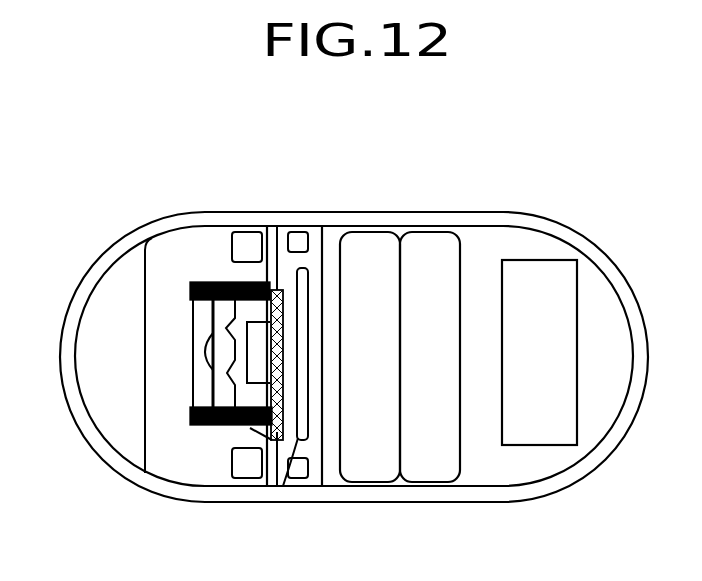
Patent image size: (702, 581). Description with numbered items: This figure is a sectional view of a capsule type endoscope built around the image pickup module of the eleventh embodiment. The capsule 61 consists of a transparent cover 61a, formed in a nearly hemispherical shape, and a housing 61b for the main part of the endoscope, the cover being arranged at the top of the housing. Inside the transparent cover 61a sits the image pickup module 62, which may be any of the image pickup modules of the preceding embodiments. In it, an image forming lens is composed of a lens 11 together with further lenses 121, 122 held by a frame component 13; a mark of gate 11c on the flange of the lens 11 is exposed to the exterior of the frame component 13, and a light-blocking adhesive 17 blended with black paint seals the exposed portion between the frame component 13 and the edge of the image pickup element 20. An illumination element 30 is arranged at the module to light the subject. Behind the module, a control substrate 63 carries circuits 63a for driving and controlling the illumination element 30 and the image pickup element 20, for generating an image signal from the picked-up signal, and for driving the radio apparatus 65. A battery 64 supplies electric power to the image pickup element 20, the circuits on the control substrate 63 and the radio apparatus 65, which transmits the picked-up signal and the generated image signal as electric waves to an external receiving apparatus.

The lens 11 is at (258, 389).
The mark of gate 11c is at (257, 433).
The lens 121 is at (198, 330).
The lens 122 is at (200, 367).
The frame component 13 is at (212, 283).
The adhesive having light blocking function 17 is at (252, 431).
The image pickup element 20 is at (282, 343).
The illumination element 30 is at (248, 232).
The capsule 61 is at (488, 152).
The transparent cover 61a is at (118, 245).
The housing for the main part of the endoscope 61b is at (390, 228).
The image pickup module 62 is at (146, 366).
The control substrate 63 is at (318, 476).
The circuits 63a is at (283, 484).
The battery 64 is at (428, 450).
The radio apparatus 65 is at (536, 430).